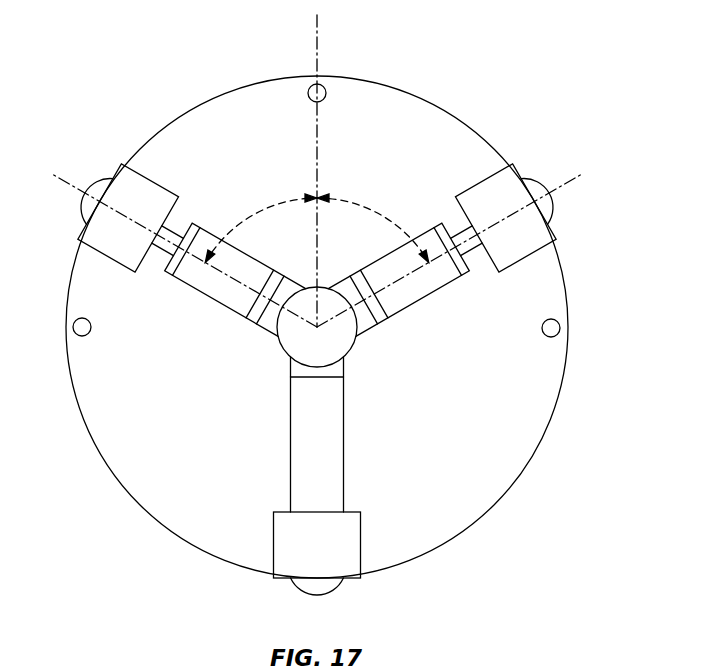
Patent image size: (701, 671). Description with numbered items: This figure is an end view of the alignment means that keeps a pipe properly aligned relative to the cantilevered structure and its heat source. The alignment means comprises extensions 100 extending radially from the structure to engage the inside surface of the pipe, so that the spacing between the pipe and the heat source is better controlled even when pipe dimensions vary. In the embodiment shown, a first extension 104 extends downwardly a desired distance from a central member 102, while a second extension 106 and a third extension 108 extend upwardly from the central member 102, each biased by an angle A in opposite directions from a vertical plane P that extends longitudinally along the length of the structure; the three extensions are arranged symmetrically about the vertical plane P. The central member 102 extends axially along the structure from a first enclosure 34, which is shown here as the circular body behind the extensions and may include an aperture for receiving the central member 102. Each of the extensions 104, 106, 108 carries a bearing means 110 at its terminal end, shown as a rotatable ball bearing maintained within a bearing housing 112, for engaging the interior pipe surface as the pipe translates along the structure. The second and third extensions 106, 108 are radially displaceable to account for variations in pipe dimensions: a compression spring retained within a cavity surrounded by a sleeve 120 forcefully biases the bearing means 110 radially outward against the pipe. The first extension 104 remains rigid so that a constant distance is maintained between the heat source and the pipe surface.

The first enclosure 34 is at (548, 422).
The extensions 100 is at (317, 361).
The central member 102 is at (328, 370).
The first extension 104 is at (288, 428).
The second extension 106 is at (235, 312).
The third extension 108 is at (399, 312).
The bearing means 110 is at (82, 201).
The bearing housing 112 is at (117, 170).
The sleeve 120 is at (183, 276).
The vertical plane P is at (320, 38).
The angle A is at (257, 218).